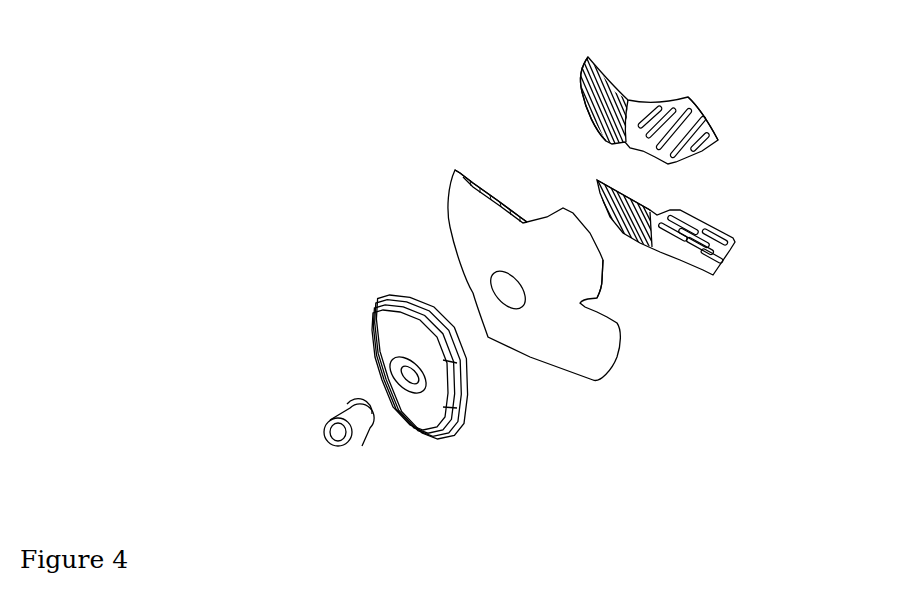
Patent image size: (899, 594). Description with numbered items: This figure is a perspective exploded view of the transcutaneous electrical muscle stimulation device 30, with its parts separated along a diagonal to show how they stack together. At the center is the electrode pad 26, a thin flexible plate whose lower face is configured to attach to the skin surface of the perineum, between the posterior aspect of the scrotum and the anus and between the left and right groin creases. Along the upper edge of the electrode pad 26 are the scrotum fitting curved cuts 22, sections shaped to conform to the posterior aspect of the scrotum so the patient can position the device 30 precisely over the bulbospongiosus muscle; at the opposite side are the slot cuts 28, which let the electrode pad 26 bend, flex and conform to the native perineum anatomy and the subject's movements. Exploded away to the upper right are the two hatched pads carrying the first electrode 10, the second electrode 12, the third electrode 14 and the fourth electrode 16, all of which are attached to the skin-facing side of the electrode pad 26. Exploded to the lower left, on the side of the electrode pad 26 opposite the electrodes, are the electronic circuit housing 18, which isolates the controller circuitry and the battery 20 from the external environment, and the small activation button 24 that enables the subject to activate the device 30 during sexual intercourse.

The first electrode 10 is at (720, 140).
The second electrode 12 is at (735, 242).
The third electrode 14 is at (578, 72).
The fourth electrode 16 is at (597, 180).
The electronic circuit housing 18 is at (398, 335).
The battery 20 is at (345, 408).
The scrotum fitting curved cuts 22 is at (527, 222).
The activation button 24 is at (332, 437).
The electrode pad 26 is at (480, 235).
The slot cuts 28 is at (605, 322).
The transcutaneous electrical muscle stimulation device 30 is at (760, 87).